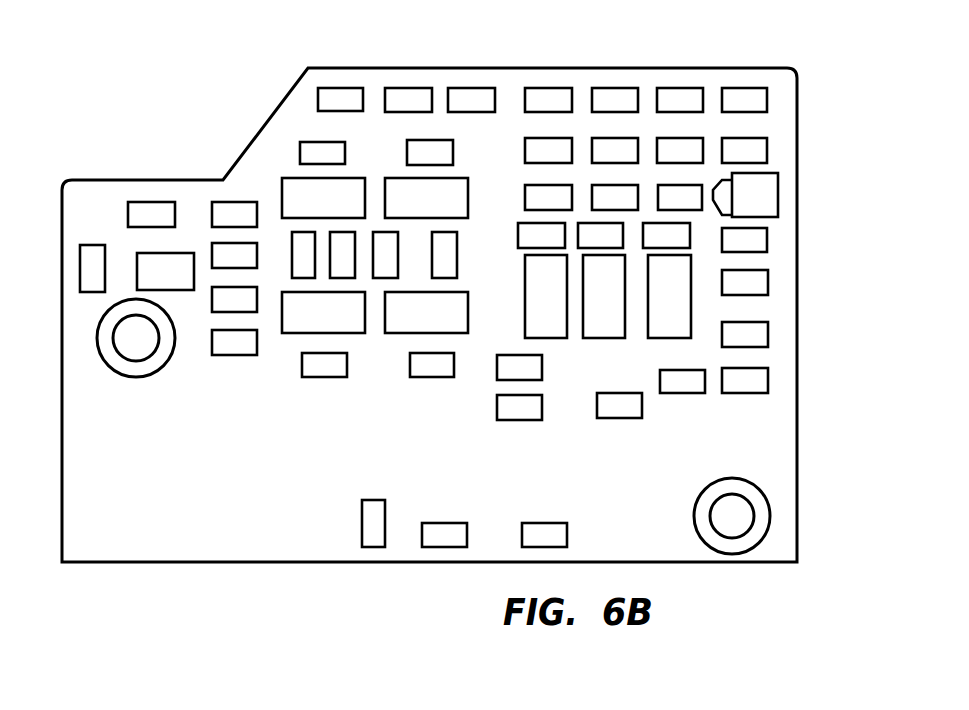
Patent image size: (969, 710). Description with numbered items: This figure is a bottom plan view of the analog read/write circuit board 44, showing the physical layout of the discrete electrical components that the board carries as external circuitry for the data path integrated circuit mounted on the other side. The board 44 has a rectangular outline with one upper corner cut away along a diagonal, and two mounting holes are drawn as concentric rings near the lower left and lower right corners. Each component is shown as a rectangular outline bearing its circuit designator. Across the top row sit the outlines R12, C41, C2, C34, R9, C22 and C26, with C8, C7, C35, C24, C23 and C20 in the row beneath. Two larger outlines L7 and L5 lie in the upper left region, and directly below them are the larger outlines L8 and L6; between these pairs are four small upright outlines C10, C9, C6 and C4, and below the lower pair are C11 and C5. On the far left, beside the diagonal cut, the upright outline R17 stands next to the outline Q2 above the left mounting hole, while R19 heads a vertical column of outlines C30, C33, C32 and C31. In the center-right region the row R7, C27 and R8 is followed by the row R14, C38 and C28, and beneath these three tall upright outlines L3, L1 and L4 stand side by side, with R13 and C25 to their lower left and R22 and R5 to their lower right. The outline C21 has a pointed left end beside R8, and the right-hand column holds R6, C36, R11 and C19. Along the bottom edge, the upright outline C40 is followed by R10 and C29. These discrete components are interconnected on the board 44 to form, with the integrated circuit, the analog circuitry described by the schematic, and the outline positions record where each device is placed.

The circuit board 44 is at (782, 435).
The resistor R12 is at (340, 99).
The capacitor C41 is at (408, 100).
The capacitor C2 is at (471, 100).
The capacitor C34 is at (548, 100).
The resistor R9 is at (615, 100).
The capacitor C22 is at (680, 100).
The capacitor C26 is at (744, 100).
The capacitor C8 is at (322, 153).
The capacitor C7 is at (430, 152).
The capacitor C35 is at (548, 150).
The capacitor C24 is at (615, 150).
The capacitor C23 is at (680, 150).
The capacitor C20 is at (744, 150).
The resistor R7 is at (548, 197).
The capacitor C27 is at (615, 197).
The resistor R8 is at (680, 197).
The capacitor C21 (polarized) C21 is at (745, 195).
The resistor R14 is at (541, 235).
The capacitor C38 is at (600, 235).
The capacitor C28 is at (666, 235).
The resistor R6 is at (744, 240).
The capacitor C36 is at (745, 282).
The resistor R11 is at (745, 334).
The capacitor C19 is at (745, 380).
The resistor R5 is at (682, 381).
The resistor R13 is at (519, 367).
The capacitor C25 is at (519, 407).
The resistor R22 is at (619, 405).
The resistor R19 is at (151, 214).
The capacitor C30 is at (234, 214).
The capacitor C33 is at (234, 255).
The capacitor C32 is at (234, 299).
The capacitor C31 is at (234, 342).
The capacitor C11 is at (324, 365).
The capacitor C5 is at (432, 365).
The resistor R10 is at (444, 535).
The capacitor C29 is at (544, 535).
The resistor R17 is at (92, 268).
The capacitor C10 is at (303, 255).
The capacitor C9 is at (342, 255).
The capacitor C6 is at (385, 255).
The capacitor C4 is at (444, 255).
The capacitor C40 is at (373, 523).
The inductor L7 is at (323, 198).
The inductor L5 is at (426, 198).
The inductor L8 is at (323, 312).
The inductor L6 is at (426, 312).
The transistor Q2 is at (165, 271).
The inductor L3 is at (546, 296).
The inductor L1 is at (604, 296).
The inductor L4 is at (669, 296).